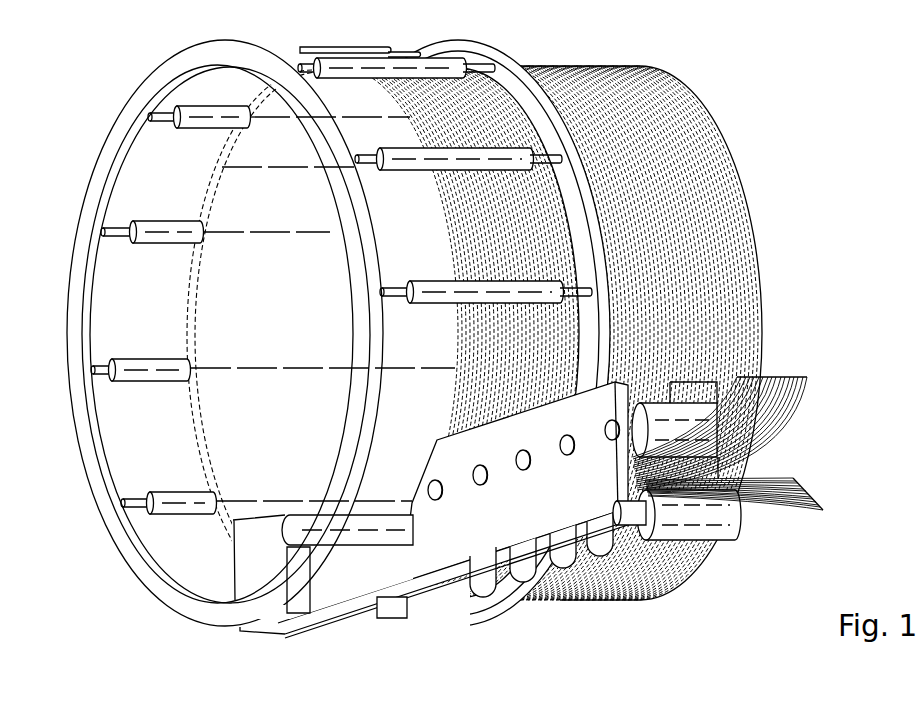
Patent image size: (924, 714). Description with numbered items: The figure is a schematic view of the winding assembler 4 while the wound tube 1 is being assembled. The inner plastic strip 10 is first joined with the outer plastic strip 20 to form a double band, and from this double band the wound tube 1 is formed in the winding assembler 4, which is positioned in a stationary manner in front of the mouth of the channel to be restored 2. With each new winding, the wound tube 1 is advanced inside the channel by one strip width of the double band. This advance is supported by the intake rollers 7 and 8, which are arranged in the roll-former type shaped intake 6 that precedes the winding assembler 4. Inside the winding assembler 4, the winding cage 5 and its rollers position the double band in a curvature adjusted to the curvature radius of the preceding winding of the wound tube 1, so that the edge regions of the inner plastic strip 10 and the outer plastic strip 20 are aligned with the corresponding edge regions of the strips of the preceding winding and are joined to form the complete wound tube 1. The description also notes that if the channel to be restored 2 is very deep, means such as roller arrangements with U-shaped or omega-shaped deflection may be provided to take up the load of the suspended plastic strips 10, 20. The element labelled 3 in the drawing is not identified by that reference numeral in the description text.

The wound tube 1 is at (704, 106).
The channel to be restored 2 is at (213, 325).
The wire winding 3 is at (758, 277).
The winding assembler 4 is at (149, 79).
The winding cage 5 is at (350, 46).
The roll-former type shaped intake 6 is at (394, 572).
The intake roller 7 is at (560, 570).
The intake roller 8 is at (677, 413).
The inner plastic strip 10 is at (787, 390).
The outer plastic strip 20 is at (793, 493).